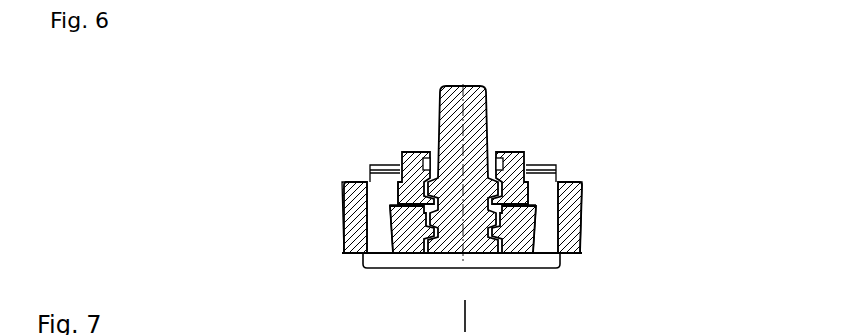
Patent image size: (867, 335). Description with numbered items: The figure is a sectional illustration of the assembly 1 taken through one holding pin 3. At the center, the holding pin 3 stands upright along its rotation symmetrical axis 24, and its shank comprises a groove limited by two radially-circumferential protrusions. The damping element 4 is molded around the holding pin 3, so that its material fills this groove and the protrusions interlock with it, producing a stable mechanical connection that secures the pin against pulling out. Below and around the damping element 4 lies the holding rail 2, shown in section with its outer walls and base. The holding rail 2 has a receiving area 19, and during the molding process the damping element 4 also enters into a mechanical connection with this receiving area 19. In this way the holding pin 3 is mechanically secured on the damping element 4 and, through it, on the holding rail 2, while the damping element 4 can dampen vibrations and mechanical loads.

The fastening assembly 1 is at (706, 40).
The holding rail 2 is at (582, 218).
The holding pin 3 is at (474, 110).
The damping element 4 is at (410, 152).
The receiving area 19 is at (534, 236).
The rotation symmetrical axis 24 is at (463, 12).